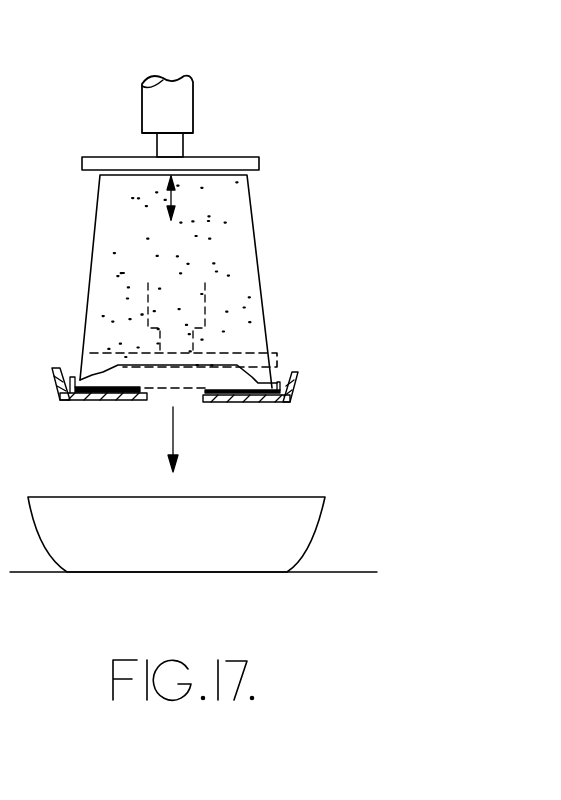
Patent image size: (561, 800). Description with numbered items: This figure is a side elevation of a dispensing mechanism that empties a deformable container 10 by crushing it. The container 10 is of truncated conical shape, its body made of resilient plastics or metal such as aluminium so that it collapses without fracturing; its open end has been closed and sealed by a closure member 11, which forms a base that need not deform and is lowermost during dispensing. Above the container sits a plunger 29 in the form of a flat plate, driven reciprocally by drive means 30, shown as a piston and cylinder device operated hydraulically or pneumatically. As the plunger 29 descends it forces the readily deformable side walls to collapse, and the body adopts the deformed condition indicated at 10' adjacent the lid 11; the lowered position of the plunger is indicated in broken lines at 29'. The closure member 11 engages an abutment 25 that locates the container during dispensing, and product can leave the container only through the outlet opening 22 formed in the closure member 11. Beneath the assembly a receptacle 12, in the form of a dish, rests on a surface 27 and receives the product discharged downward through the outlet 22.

The container 10 is at (204, 281).
The deformed condition of the container 10' is at (206, 352).
The closure member 11 is at (247, 403).
The receptacle 12 is at (311, 544).
The outlet opening 22 is at (183, 395).
The abutment 25 is at (290, 403).
The surface 27 is at (307, 574).
The plunger 29 is at (202, 154).
The lowered position of the plunger 29' is at (158, 318).
The drive means 30 is at (175, 149).